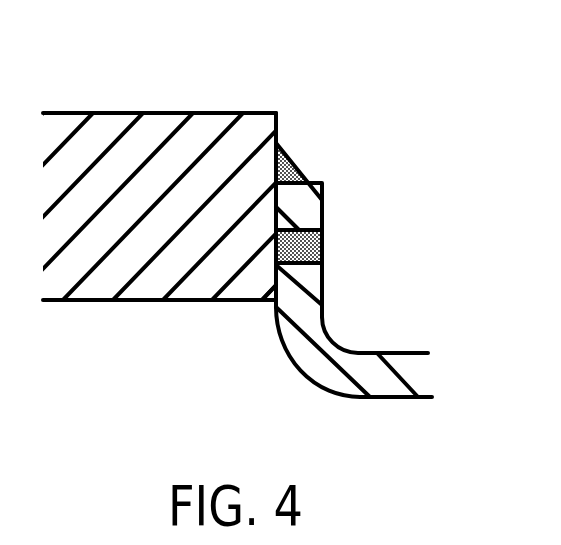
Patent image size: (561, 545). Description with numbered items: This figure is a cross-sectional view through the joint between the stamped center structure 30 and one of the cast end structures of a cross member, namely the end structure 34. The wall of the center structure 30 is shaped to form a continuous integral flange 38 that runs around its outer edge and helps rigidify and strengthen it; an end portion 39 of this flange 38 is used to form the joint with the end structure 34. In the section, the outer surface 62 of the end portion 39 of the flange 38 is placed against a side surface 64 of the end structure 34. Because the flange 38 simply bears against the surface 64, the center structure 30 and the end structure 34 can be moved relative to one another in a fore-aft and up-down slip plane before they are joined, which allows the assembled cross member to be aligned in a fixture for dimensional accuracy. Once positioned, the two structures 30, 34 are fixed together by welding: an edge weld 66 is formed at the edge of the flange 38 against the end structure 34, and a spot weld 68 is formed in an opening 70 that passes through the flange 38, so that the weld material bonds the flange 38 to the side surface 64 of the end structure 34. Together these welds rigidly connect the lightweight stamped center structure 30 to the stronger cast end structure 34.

The center structure 30 is at (438, 335).
The end structure 34 is at (250, 92).
The flange 38 is at (333, 397).
The end portion 39 is at (308, 215).
The outer surface 62 is at (272, 275).
The side surface 64 is at (277, 123).
The edge weld 66 is at (298, 167).
The spot weld 68 is at (308, 247).
The opening 70 is at (305, 261).